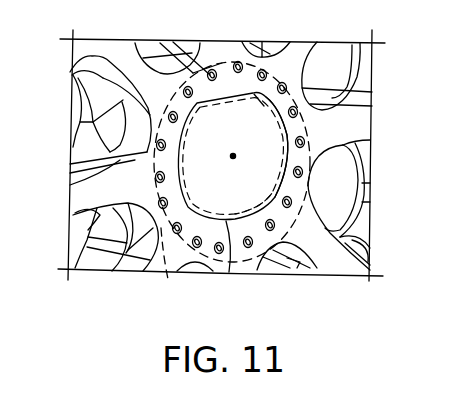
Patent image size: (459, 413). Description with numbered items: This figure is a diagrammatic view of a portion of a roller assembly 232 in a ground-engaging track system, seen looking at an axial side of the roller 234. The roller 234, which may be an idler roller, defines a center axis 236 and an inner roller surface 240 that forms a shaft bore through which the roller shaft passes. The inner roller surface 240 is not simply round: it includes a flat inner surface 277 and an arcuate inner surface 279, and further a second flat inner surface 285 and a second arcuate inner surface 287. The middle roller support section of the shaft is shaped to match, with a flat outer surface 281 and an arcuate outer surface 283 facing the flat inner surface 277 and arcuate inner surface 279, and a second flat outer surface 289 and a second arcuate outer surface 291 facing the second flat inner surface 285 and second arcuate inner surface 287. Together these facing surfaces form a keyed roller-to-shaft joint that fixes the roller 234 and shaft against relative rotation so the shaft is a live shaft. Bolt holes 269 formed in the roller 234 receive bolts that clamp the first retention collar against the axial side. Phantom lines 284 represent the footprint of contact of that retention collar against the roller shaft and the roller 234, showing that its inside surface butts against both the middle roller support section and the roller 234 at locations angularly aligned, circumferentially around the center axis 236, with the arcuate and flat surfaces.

The roller assembly 232 is at (340, 283).
The roller 234 is at (92, 190).
The center axis 236 is at (230, 161).
The inner roller surface 240 is at (302, 77).
The bolt holes 269 is at (173, 47).
The flat inner surface 277 is at (233, 101).
The arcuate inner surface 279 is at (288, 155).
The flat outer surface 281 is at (265, 34).
The arcuate outer surface 283 is at (290, 125).
The phantom lines 284 is at (168, 278).
The second flat inner surface 285 is at (250, 208).
The second arcuate inner surface 287 is at (181, 156).
The second flat outer surface 289 is at (229, 272).
The second arcuate outer surface 291 is at (177, 183).